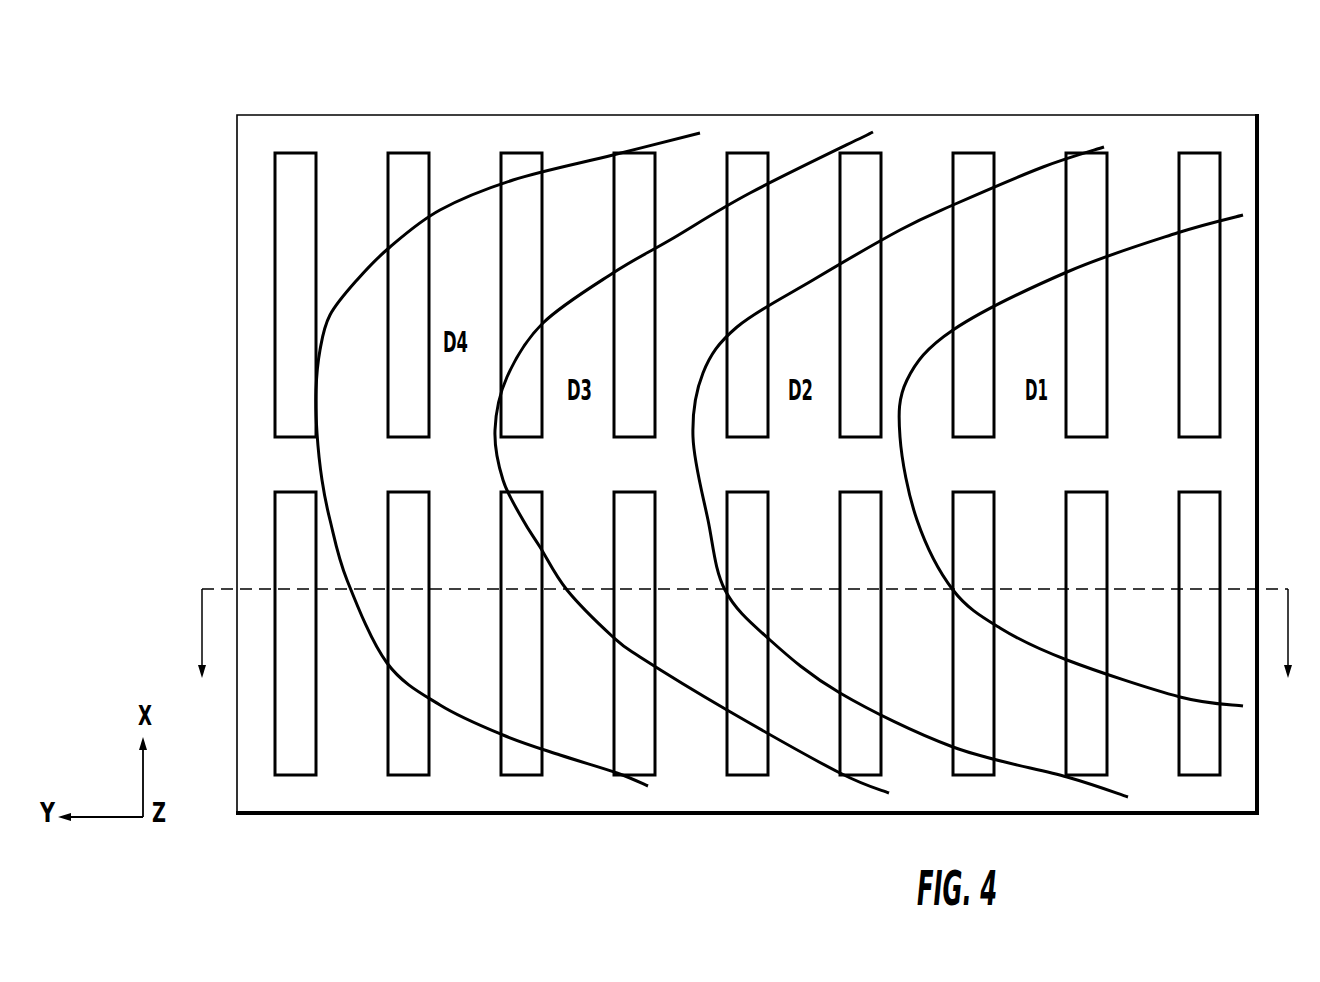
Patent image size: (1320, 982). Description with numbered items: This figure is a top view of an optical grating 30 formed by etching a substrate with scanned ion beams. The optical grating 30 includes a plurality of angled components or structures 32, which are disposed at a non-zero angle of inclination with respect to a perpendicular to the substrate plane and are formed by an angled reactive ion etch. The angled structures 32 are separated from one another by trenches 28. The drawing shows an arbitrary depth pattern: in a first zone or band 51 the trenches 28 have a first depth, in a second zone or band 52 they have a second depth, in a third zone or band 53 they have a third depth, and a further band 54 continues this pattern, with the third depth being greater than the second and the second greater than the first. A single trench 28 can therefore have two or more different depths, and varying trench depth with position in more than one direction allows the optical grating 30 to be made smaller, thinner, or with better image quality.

The trenches 28 is at (408, 180).
The optical grating 30 is at (768, 438).
The angled components/structures 32 is at (746, 454).
The first zone or band 51 is at (1183, 233).
The second zone or band 52 is at (1043, 167).
The third zone or band 53 is at (843, 147).
The fourth flow streamline 54 is at (645, 140).